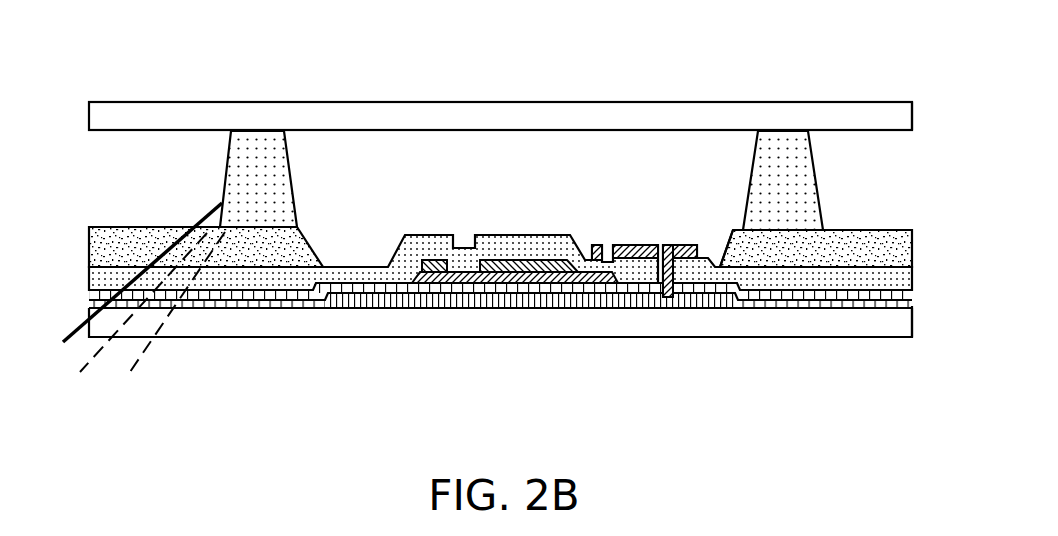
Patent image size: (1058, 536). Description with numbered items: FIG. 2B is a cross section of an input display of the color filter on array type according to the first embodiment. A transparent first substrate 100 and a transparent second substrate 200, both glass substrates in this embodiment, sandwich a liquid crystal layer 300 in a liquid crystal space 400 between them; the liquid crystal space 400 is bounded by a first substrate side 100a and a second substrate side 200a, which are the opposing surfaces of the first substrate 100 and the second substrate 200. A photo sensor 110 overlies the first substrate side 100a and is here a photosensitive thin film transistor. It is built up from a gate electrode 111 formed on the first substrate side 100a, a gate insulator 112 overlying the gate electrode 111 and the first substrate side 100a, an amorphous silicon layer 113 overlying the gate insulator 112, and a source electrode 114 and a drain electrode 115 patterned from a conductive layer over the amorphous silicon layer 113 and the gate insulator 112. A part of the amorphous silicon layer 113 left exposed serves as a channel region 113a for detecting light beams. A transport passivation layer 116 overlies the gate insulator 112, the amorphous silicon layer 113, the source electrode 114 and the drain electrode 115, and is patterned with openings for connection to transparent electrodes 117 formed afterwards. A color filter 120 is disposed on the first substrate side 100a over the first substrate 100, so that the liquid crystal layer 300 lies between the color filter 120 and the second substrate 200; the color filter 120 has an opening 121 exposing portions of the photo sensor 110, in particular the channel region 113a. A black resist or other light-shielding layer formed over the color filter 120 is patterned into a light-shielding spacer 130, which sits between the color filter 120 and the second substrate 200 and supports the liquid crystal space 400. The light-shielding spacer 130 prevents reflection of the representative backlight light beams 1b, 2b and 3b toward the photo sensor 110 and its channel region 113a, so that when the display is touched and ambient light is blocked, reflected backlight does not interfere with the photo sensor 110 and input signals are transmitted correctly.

The first substrate 100 is at (828, 327).
The first substrate side 100a is at (912, 310).
The photo sensor 110 is at (733, 409).
The gate electrode 111 is at (533, 305).
The gate insulator 112 is at (472, 286).
The amorphous silicon layer 113 is at (548, 281).
The channel region 113a is at (479, 246).
The source electrode 114 is at (643, 255).
The drain electrode 115 is at (418, 281).
The transport passivation layer 116 is at (402, 268).
The transparent electrodes 117 is at (670, 278).
The color filter 120 is at (250, 257).
The opening 121 is at (739, 260).
The light-shielding spacer 130 is at (278, 163).
The second substrate 200 is at (457, 110).
The second substrate side 200a is at (912, 126).
The liquid crystal layer 300 is at (853, 172).
The liquid crystal space 400 is at (77, 140).
The light beam 1b is at (73, 338).
The light beam 2b is at (100, 352).
The light beam 3b is at (147, 343).